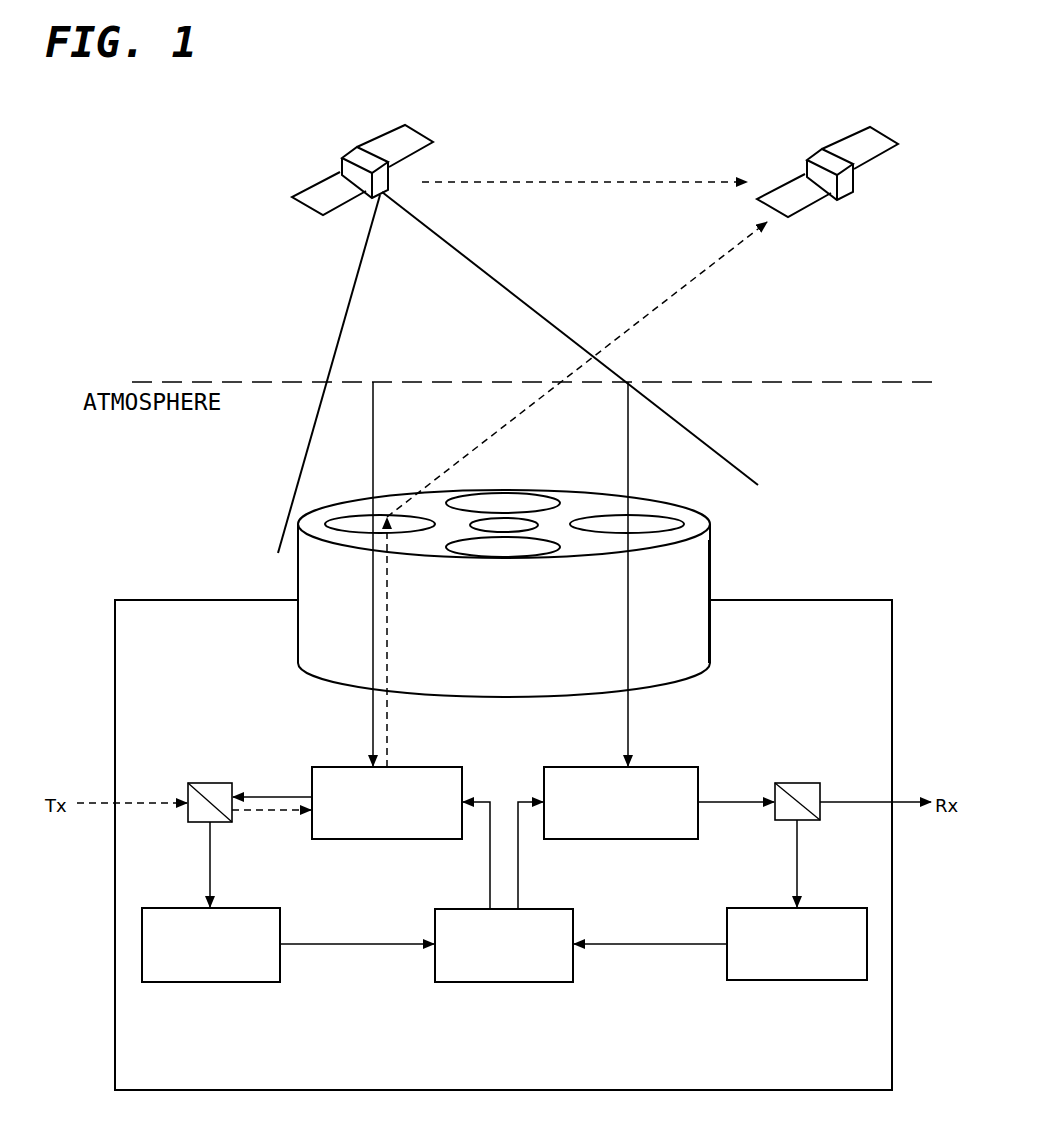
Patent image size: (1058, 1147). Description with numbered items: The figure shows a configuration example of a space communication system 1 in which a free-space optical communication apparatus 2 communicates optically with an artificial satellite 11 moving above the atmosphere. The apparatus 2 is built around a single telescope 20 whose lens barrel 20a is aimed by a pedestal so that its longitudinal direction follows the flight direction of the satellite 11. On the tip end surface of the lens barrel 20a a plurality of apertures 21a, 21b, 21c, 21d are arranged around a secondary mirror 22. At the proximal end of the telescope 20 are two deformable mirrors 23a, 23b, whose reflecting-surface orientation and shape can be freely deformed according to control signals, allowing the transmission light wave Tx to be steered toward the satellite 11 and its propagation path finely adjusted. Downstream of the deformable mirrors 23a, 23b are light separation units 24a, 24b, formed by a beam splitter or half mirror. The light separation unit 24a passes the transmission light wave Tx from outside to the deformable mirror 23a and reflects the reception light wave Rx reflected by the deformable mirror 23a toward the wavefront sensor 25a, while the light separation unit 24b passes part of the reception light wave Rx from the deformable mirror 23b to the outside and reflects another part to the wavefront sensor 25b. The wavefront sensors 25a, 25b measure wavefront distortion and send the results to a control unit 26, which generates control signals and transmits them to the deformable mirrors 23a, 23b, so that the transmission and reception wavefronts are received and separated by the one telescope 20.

The space communication system 1 is at (878, 325).
The free-space optical communication apparatus 2 is at (895, 650).
The artificial satellite 11 is at (390, 132).
The telescope 20 is at (297, 596).
The lens barrel 20a is at (710, 570).
The aperture 21a is at (338, 518).
The aperture 21b is at (506, 493).
The aperture 21c is at (667, 518).
The aperture 21d is at (507, 557).
The secondary mirror 22 is at (563, 520).
The deformable mirror 23a is at (382, 840).
The deformable mirror 23b is at (628, 840).
The light separation unit 24a is at (210, 783).
The light separation unit 24b is at (795, 783).
The wavefront sensor 25a is at (212, 983).
The wavefront sensor 25b is at (797, 981).
The control unit 26 is at (505, 983).